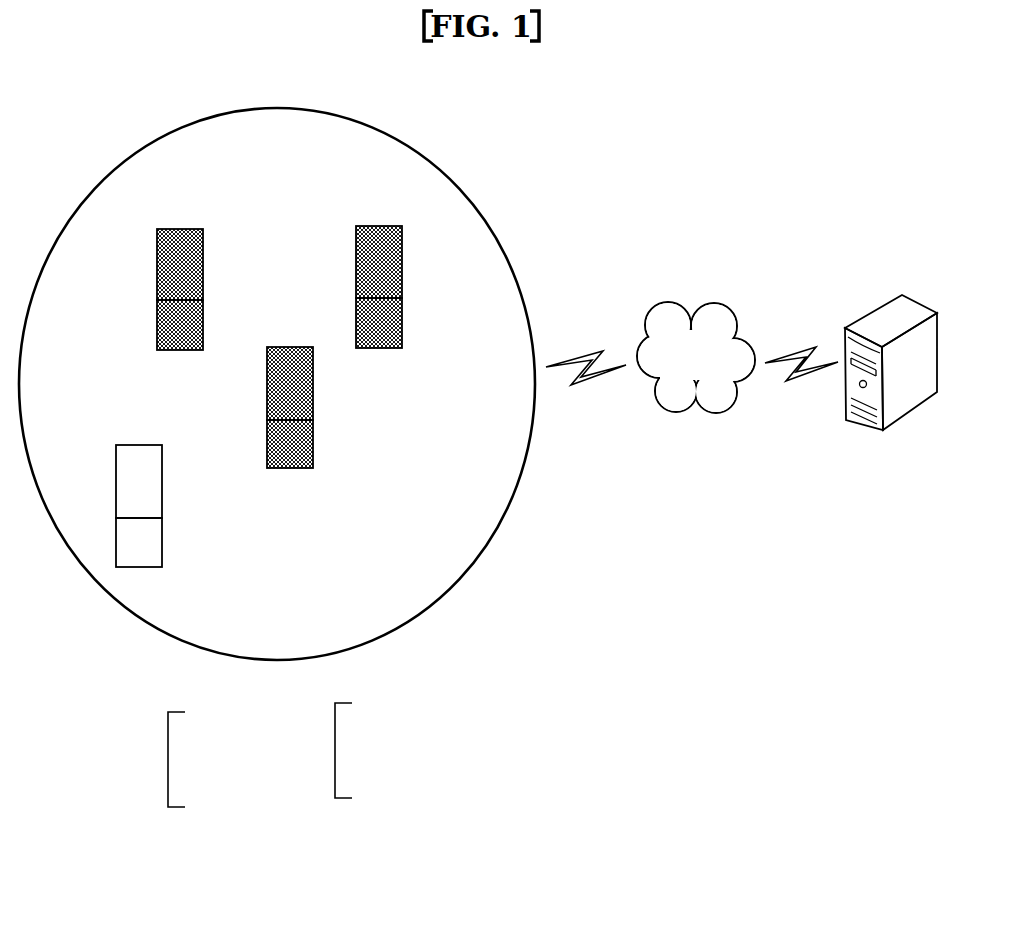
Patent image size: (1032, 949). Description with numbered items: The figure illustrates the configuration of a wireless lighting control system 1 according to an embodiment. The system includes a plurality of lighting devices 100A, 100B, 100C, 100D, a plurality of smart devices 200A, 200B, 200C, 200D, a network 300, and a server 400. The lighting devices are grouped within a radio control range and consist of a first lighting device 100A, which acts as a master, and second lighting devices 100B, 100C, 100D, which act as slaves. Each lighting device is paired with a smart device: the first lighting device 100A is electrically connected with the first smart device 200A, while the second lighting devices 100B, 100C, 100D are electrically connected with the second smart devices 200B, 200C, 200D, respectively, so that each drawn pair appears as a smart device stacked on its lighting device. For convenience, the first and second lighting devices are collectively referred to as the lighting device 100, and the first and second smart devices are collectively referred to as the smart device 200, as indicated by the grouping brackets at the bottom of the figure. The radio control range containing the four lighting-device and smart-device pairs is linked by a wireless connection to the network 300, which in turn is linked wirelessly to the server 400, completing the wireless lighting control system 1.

The wireless lighting control system 1 is at (822, 116).
The lighting device 100 is at (168, 761).
The first lighting device 100A is at (162, 536).
The second lighting device 100B is at (313, 438).
The second lighting device 100C is at (203, 309).
The second lighting device 100D is at (402, 314).
The smart device 200 is at (335, 754).
The first smart device 200A is at (162, 482).
The second smart device 200B is at (313, 383).
The second smart device 200C is at (203, 256).
The second smart device 200D is at (402, 260).
The network 300 is at (700, 302).
The server 400 is at (885, 294).